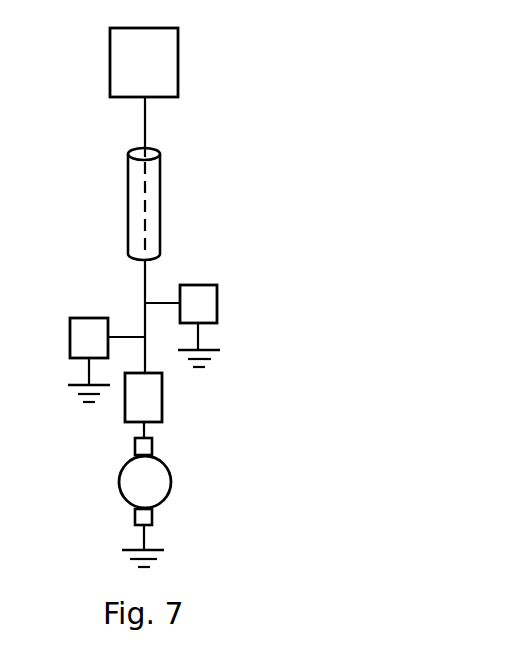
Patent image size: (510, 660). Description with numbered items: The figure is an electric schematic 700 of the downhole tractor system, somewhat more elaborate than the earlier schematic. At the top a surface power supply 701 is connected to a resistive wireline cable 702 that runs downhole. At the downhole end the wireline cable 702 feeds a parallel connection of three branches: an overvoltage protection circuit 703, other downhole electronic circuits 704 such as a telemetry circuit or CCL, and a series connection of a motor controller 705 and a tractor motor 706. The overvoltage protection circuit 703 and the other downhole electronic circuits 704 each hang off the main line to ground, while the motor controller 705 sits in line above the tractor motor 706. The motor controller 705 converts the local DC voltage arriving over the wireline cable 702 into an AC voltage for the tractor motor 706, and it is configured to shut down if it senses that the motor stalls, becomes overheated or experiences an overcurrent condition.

The electric schematic 700 is at (392, 76).
The surface power supply 701 is at (110, 59).
The wireline cable 702 is at (161, 200).
The overvoltage protection circuit 703 is at (218, 300).
The other downhole electronic circuits 704 is at (70, 330).
The motor controller 705 is at (163, 390).
The tractor motor 706 is at (173, 478).